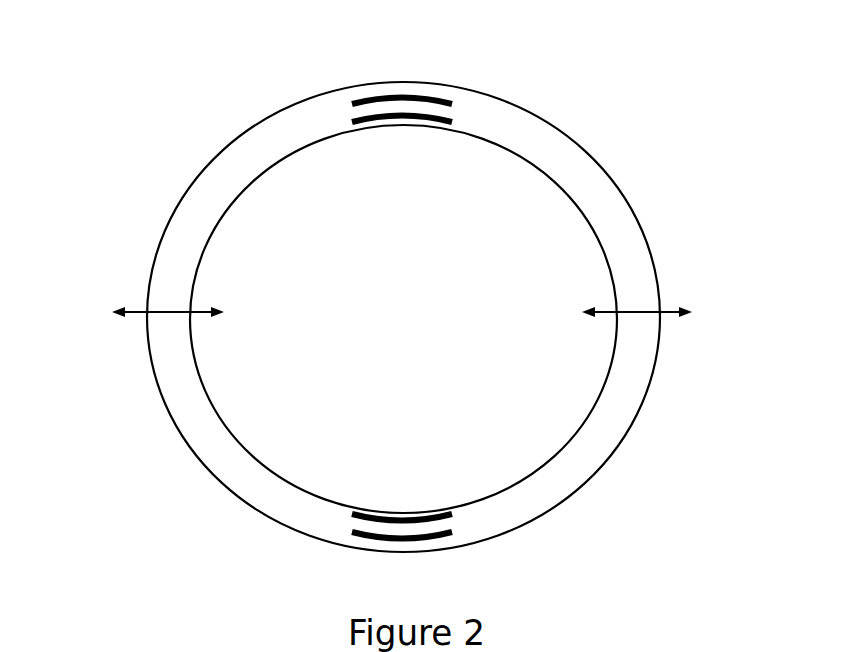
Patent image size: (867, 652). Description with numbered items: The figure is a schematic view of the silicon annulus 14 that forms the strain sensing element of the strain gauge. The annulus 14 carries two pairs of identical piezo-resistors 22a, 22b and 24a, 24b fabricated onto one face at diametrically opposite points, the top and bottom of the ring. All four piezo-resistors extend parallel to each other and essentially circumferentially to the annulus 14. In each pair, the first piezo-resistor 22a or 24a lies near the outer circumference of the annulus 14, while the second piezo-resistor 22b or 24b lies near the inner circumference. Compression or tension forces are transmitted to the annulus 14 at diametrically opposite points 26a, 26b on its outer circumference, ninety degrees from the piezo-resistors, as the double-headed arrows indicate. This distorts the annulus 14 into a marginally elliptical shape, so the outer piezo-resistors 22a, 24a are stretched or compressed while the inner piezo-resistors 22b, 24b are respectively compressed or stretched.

The silicon annulus 14 is at (177, 200).
The first piezo-resistor 22a is at (405, 113).
The second piezo-resistor 22b is at (405, 113).
The first piezo-resistor 24a is at (413, 497).
The second piezo-resistor 24b is at (413, 497).
The diametrically opposite point 26a is at (134, 292).
The diametrically opposite point 26b is at (680, 287).